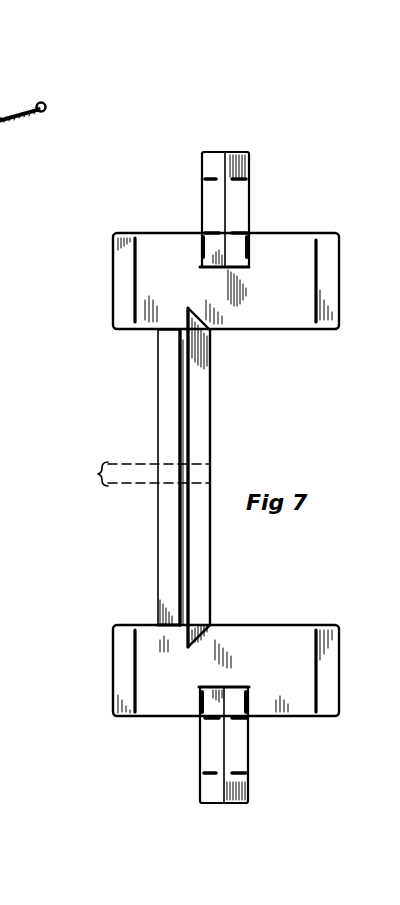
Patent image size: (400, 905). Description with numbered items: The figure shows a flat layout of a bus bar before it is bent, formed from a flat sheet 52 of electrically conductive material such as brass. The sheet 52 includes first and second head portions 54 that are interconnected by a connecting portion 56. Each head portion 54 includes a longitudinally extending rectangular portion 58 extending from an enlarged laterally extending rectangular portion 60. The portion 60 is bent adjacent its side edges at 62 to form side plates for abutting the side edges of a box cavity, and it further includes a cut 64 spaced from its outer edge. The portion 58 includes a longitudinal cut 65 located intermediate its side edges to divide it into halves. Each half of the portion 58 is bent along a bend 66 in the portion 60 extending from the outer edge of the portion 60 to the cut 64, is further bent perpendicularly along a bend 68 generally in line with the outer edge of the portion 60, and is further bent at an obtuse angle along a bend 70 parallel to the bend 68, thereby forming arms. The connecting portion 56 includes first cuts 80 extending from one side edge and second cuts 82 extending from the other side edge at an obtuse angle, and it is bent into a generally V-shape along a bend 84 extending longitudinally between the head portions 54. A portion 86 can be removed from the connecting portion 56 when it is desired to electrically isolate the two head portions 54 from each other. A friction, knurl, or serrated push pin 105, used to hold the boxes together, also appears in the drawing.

The flat sheet 52 is at (275, 133).
The head portion 54 is at (112, 288).
The connecting portion 56 is at (210, 418).
The longitudinally extending rectangular portion 58 is at (203, 153).
The enlarged laterally extending rectangular portion 60 is at (120, 303).
The bend 62 is at (135, 257).
The cut 64 is at (220, 268).
The longitudinal cut 65 is at (229, 158).
The bend 66 is at (200, 246).
The bend 68 is at (233, 230).
The bend 70 is at (238, 178).
The first cut 80 is at (158, 625).
The second cut 82 is at (210, 626).
The bend 84 is at (178, 442).
The removable portion 86 is at (97, 477).
The push pin 105 is at (47, 102).